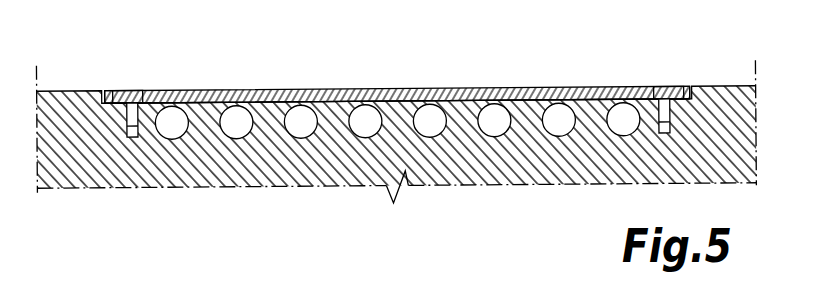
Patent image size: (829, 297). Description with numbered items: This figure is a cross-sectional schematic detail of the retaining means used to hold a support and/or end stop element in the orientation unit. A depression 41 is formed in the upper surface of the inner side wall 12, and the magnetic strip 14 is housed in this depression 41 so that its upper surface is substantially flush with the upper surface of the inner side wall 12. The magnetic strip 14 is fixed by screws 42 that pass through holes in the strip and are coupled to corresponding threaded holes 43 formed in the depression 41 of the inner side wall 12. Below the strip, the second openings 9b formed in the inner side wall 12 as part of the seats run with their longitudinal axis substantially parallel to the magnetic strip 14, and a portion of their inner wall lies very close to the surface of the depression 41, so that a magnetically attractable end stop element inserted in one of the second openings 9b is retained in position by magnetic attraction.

The inner side wall 12 is at (226, 157).
The magnetic strip 14 is at (337, 92).
The second openings 9b is at (303, 125).
The depression 41 is at (527, 102).
The screws 42 is at (132, 89).
The threaded holes 43 is at (123, 118).